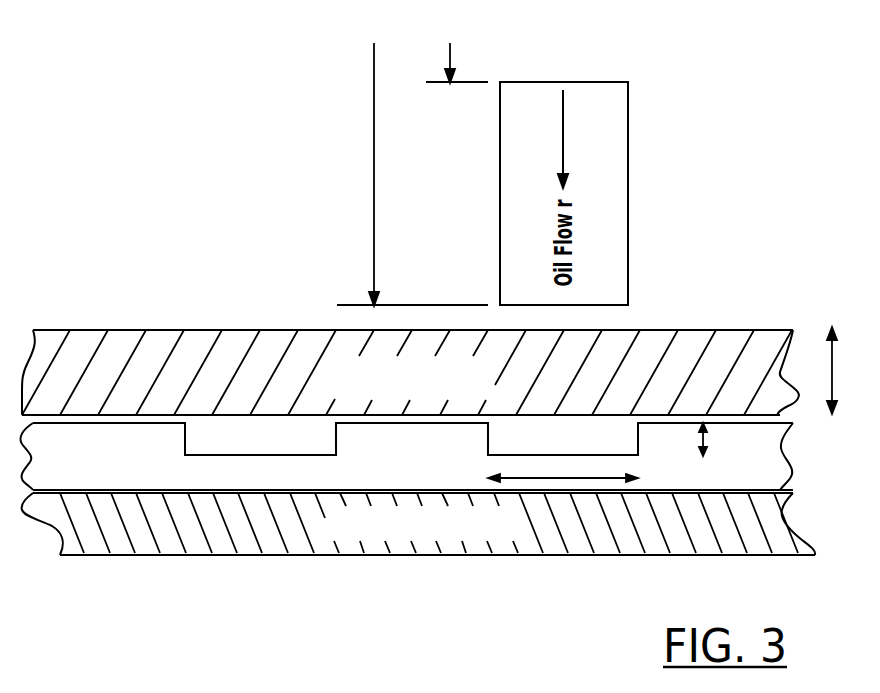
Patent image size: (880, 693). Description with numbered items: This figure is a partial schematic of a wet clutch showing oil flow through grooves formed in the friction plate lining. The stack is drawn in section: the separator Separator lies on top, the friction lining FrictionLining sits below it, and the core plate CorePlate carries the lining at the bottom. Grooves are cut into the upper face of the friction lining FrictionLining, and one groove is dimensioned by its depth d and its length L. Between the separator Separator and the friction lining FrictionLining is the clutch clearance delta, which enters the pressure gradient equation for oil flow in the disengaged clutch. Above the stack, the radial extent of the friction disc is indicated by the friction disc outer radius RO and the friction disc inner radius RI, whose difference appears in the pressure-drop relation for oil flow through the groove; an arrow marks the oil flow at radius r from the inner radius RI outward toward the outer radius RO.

The separator Separator is at (410, 372).
The friction plate lining FrictionLining is at (406, 456).
The core plate CorePlate is at (418, 524).
The friction disc outer radius RO is at (406, 174).
The friction disc inner radius RI is at (443, 59).
The clutch clearance delta is at (816, 370).
The groove depth d is at (685, 439).
The groove length L is at (563, 471).